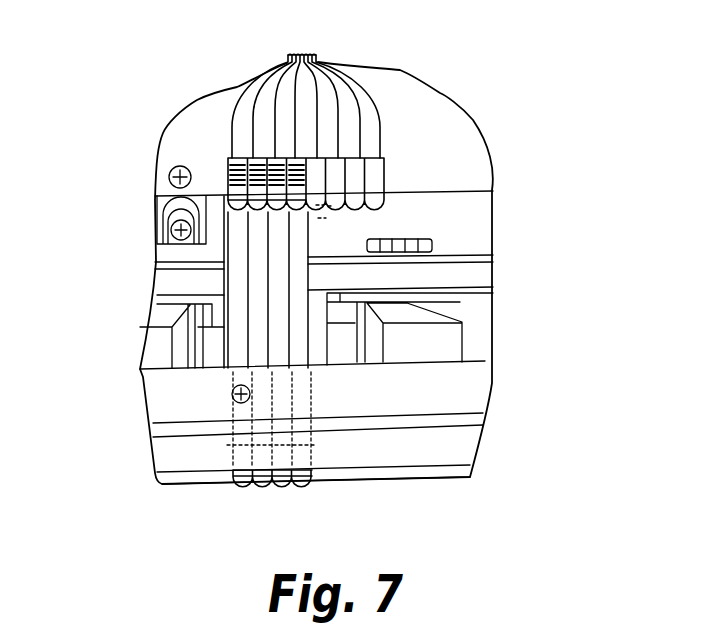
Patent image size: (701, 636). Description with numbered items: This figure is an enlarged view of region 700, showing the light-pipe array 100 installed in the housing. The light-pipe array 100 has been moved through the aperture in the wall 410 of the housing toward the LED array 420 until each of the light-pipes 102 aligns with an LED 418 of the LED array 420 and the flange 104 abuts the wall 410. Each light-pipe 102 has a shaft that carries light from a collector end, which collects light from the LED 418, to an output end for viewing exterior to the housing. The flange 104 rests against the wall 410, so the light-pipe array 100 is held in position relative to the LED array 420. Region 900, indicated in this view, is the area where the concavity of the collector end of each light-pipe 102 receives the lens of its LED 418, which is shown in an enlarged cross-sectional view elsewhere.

The region 700 is at (516, 101).
The LED array 420 is at (305, 43).
The LED 418 is at (230, 157).
The light-pipe array 100 is at (226, 284).
The light-pipe 102 is at (295, 287).
The region 900 is at (331, 217).
The wall 410 is at (467, 413).
The flange 104 is at (317, 440).